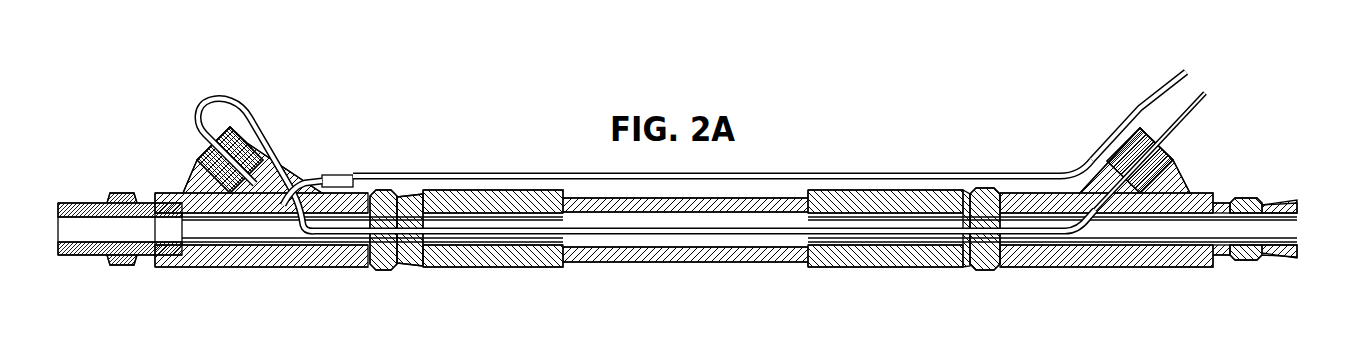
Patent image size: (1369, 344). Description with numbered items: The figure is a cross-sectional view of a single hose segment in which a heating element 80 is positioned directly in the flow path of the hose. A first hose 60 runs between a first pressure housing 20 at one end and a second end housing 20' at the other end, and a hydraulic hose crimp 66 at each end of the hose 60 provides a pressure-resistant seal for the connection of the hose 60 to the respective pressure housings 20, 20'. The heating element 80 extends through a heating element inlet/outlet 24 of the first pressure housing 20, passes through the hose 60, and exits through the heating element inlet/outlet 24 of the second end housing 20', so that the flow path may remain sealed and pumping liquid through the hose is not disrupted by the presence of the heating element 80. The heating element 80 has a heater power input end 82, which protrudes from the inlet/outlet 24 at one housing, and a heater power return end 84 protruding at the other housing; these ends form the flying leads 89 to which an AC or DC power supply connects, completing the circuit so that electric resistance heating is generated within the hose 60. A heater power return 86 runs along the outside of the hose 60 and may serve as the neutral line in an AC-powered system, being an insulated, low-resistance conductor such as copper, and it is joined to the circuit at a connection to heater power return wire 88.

The short pressure housing 20 is at (720, 177).
The second end housing 20' is at (261, 216).
The heating element inlet/outlet 24 is at (205, 162).
The first hose 60 is at (727, 263).
The hydraulic hose crimp 66 is at (500, 268).
The heating element 80 is at (620, 237).
The heater power input end 82 is at (1205, 108).
The heater power return end 84 is at (1158, 98).
The heater power return 86 is at (840, 172).
The connection to heater power return wire 88 is at (340, 175).
The flying leads 89 is at (1200, 82).